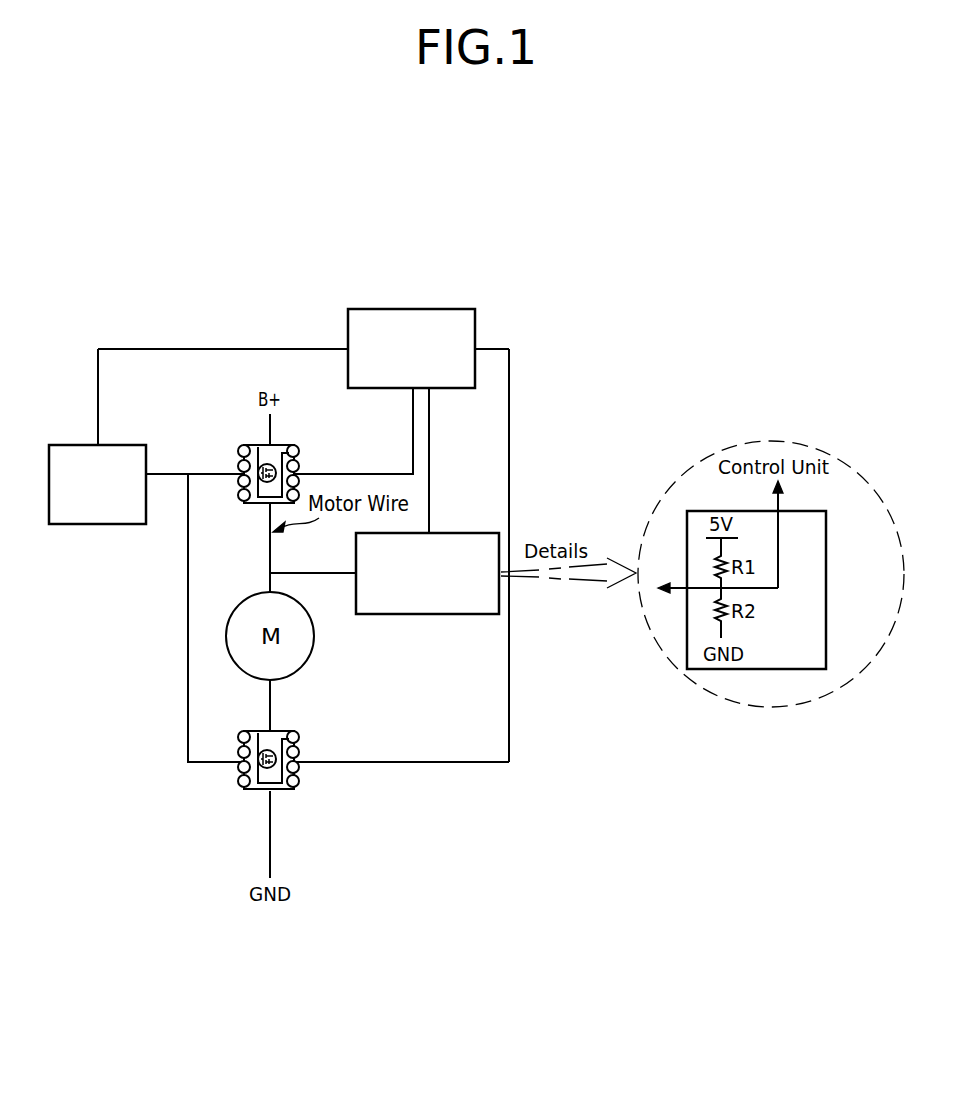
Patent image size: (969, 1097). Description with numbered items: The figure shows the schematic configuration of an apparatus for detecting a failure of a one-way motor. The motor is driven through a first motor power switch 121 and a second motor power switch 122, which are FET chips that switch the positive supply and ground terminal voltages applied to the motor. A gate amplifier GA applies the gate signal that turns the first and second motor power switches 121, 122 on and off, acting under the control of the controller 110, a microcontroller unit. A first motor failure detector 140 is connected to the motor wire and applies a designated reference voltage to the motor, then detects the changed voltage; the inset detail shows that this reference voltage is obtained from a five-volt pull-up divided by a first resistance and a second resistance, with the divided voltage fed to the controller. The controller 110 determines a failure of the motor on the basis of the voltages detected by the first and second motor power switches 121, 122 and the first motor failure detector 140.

The controller 110 is at (409, 306).
The first motor power switch 121 is at (288, 443).
The second motor power switch 122 is at (282, 730).
The first motor failure detector 140 is at (464, 530).
The gate amplifier GA is at (120, 443).